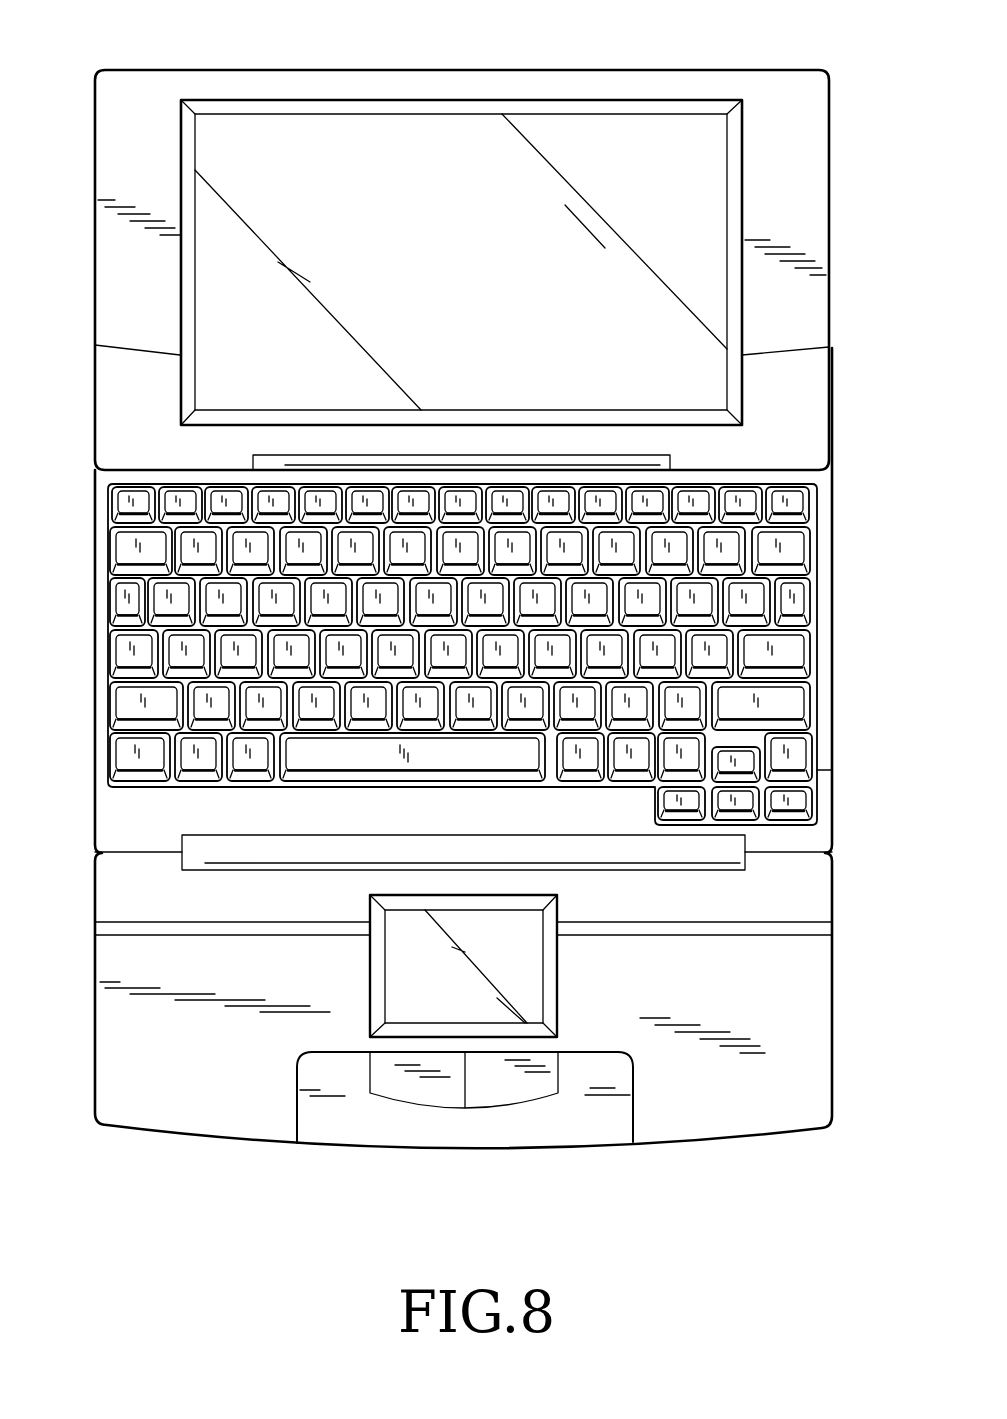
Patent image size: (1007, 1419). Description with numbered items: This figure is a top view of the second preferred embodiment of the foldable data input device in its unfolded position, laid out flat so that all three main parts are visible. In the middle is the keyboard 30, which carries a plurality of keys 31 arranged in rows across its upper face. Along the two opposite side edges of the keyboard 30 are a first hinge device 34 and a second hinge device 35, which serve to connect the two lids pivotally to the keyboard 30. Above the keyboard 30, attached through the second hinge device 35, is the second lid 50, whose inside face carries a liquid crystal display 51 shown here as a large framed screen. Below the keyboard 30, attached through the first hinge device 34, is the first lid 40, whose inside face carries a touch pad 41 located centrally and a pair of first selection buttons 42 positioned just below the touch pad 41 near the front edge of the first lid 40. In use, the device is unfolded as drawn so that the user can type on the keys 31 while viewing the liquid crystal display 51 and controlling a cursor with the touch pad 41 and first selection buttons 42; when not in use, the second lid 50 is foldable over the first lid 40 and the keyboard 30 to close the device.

The second lid 50 is at (637, 72).
The liquid crystal display 51 is at (262, 152).
The second hinge device 35 is at (670, 463).
The keyboard 30 is at (474, 654).
The keys 31 is at (128, 648).
The first hinge device 34 is at (198, 852).
The first lid 40 is at (767, 1083).
The touch pad 41 is at (520, 990).
The first selection buttons 42 is at (407, 1095).